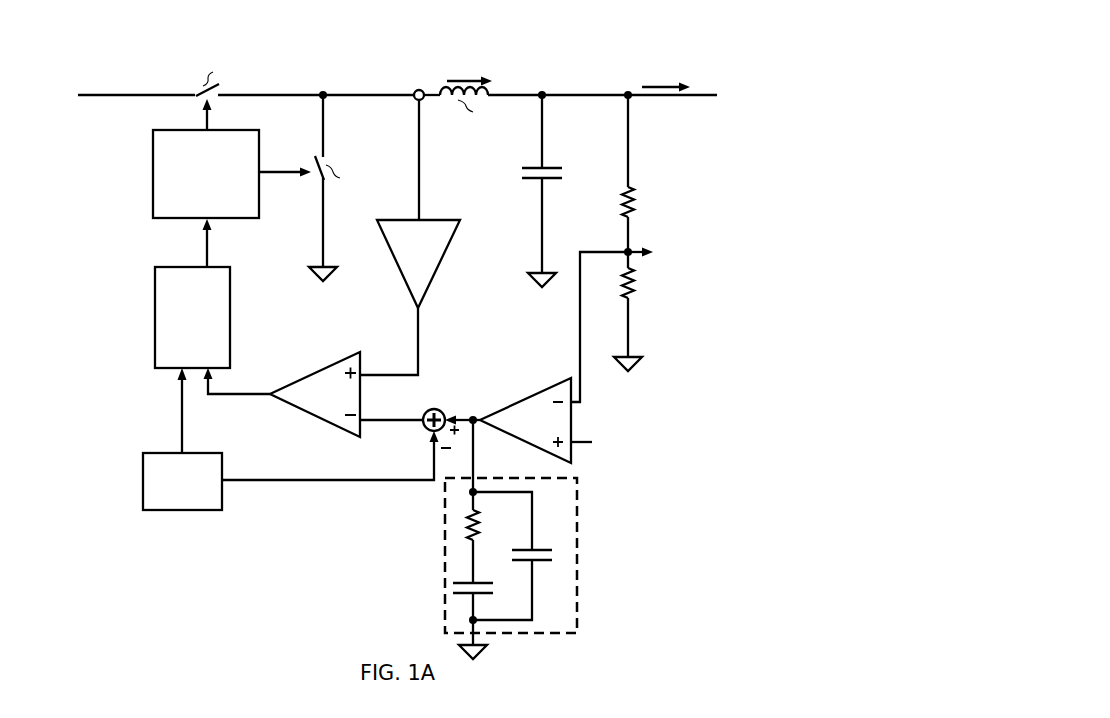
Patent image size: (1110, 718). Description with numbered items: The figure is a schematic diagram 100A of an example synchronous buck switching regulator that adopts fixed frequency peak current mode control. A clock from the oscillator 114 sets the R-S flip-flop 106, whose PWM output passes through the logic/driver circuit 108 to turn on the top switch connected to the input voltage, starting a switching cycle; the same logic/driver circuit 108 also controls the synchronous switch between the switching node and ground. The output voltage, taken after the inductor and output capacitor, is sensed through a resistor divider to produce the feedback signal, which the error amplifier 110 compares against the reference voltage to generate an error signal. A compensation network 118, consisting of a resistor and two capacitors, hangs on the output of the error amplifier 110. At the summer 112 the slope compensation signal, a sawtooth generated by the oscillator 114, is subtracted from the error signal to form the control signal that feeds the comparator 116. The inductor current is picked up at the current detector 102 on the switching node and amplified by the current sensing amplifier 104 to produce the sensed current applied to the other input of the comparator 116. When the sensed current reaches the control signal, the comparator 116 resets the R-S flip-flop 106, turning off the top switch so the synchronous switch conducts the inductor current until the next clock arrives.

The schematic diagram 100A is at (698, 26).
The current detector 102 is at (416, 91).
The current sensing amplifier 104 is at (425, 270).
The R-S flip-flop 106 is at (210, 324).
The logic/driver circuit 108 is at (187, 213).
The error amplifier 110 is at (541, 388).
The summer 112 is at (427, 431).
The oscillator 114 is at (163, 504).
The comparator 116 is at (342, 407).
The compensation network 118 is at (578, 595).